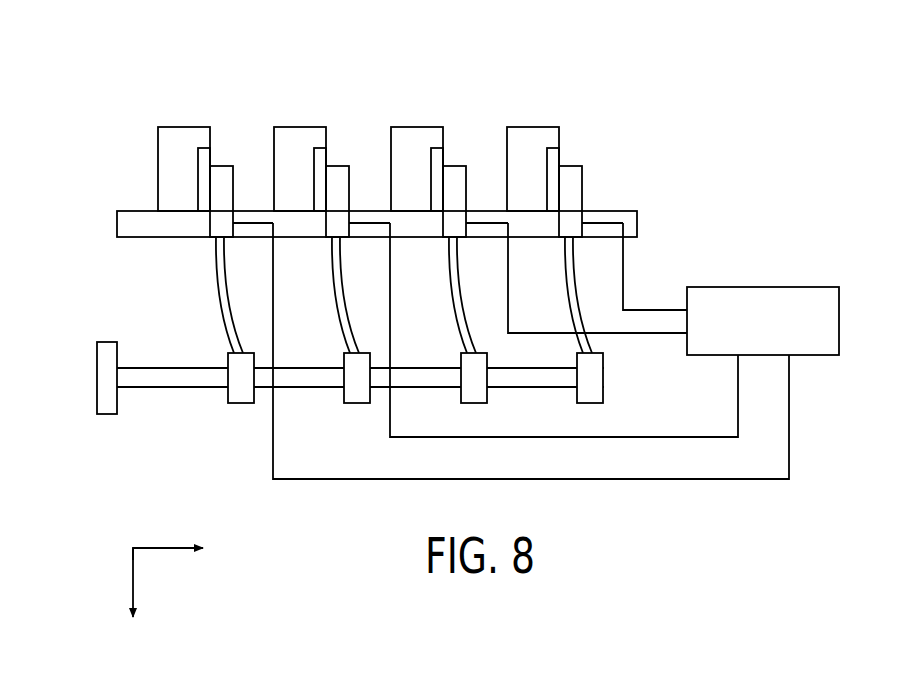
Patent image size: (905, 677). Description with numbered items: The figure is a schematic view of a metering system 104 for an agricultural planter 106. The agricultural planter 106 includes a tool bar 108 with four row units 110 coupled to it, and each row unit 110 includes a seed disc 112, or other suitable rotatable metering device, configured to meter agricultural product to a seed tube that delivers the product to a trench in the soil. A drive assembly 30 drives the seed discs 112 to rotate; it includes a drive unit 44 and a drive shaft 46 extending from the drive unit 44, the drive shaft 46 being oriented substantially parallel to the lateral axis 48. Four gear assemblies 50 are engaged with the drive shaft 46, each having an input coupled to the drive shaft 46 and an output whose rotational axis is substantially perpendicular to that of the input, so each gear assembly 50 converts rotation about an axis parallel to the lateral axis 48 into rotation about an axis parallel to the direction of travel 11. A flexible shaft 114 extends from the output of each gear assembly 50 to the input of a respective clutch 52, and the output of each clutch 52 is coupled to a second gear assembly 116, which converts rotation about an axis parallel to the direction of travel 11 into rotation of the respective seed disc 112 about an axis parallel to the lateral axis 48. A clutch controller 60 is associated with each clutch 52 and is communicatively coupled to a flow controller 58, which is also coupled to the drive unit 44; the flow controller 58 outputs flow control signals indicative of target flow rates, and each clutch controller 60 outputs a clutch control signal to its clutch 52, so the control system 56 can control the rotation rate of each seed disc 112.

The direction of travel 11 is at (135, 578).
The drive assembly 30 is at (73, 353).
The drive unit 44 is at (107, 404).
The drive shaft 46 is at (162, 378).
The lateral axis 48 is at (162, 548).
The gear assembly 50 is at (240, 404).
The clutch 52 is at (218, 222).
The control system 56 is at (810, 408).
The flow controller 58 is at (765, 287).
The clutch controller 60 is at (439, 246).
The metering system 104 is at (98, 273).
The agricultural planter 106 is at (735, 173).
The tool bar 108 is at (142, 220).
The row unit 110 is at (187, 127).
The seed disc 112 is at (205, 153).
The flexible shaft 114 is at (229, 316).
The second gear assembly 116 is at (225, 182).